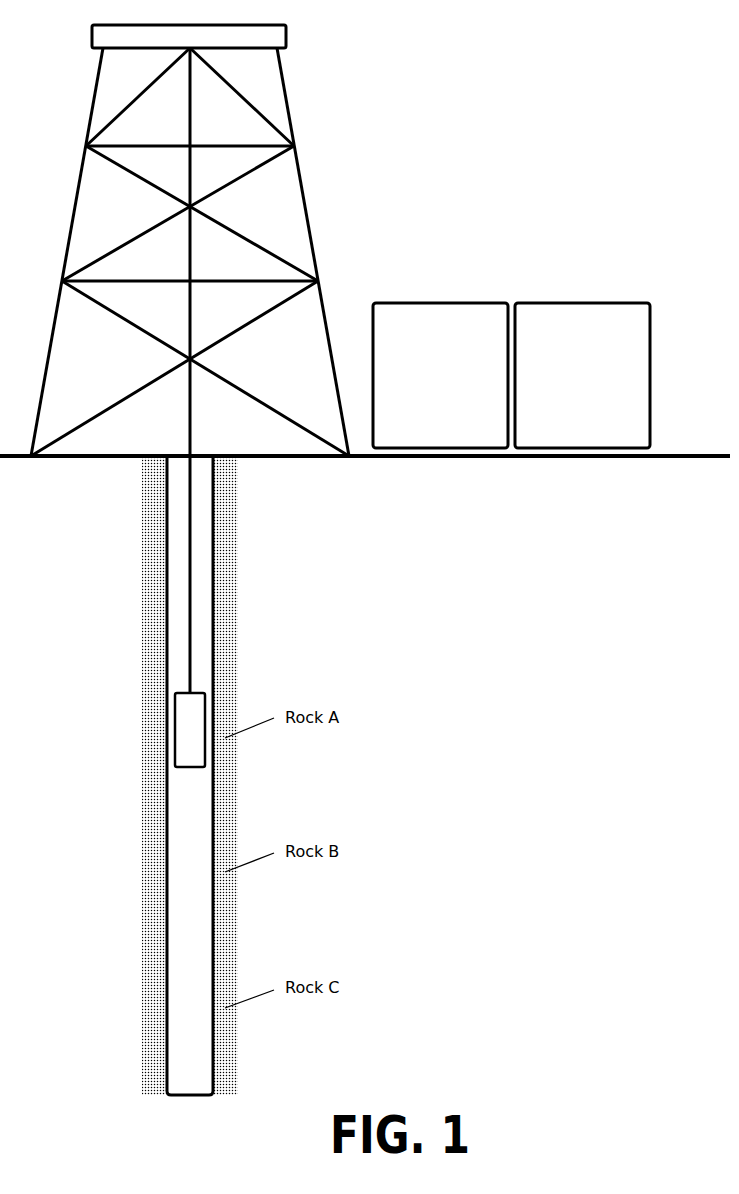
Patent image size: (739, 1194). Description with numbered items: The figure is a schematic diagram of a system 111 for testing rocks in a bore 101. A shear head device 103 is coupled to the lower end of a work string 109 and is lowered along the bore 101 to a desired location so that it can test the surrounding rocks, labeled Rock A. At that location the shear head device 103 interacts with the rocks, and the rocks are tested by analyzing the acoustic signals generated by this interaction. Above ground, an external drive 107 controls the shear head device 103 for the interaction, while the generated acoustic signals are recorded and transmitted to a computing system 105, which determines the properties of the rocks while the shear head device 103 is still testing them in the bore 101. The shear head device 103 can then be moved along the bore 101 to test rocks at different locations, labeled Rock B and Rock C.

The bore 101 is at (420, 570).
The shear head device 103 is at (125, 660).
The computing system 105 is at (440, 375).
The external drive 107 is at (582, 375).
The work string 109 is at (191, 568).
The system 111 is at (614, 148).